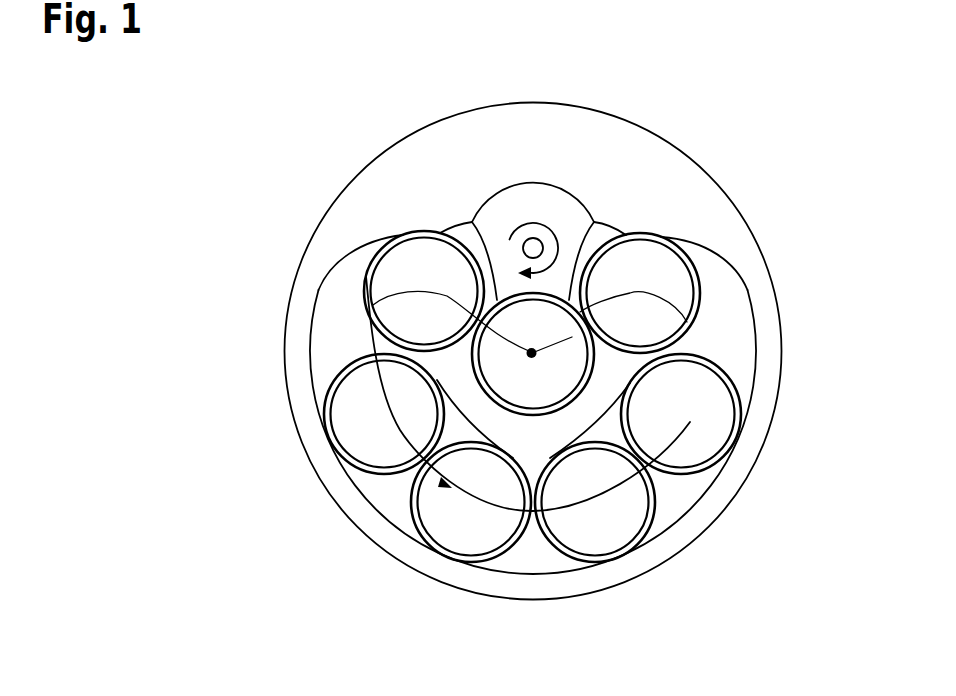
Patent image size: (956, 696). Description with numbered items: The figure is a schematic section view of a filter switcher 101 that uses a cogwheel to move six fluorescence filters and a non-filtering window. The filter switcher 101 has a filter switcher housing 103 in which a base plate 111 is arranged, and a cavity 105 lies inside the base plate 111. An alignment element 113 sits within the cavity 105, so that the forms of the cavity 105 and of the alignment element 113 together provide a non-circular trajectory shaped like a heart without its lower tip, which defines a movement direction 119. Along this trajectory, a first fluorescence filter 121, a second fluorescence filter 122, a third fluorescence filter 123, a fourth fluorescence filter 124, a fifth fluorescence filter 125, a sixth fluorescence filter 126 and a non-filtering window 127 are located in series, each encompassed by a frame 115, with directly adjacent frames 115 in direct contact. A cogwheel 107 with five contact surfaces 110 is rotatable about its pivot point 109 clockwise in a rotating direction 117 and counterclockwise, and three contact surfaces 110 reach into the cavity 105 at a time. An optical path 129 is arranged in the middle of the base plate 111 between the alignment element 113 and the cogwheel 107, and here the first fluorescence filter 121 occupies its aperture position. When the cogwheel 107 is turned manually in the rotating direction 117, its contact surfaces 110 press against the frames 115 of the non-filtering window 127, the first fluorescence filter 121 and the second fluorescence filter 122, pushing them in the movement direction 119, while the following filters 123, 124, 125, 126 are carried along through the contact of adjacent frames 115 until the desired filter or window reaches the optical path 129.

The filter switcher 101 is at (190, 133).
The filter switcher housing 103 is at (733, 497).
The cavity 105 is at (727, 333).
The cogwheel 107 is at (537, 238).
The pivot point 109 is at (553, 228).
The contact surfaces 110 is at (507, 212).
The base plate 111 is at (458, 166).
The alignment element 113 is at (587, 416).
The frame 115 is at (448, 398).
The rotating direction 117 is at (521, 184).
The movement direction 119 is at (490, 507).
The first fluorescence filter 121 is at (517, 332).
The second fluorescence filter 122 is at (400, 276).
The third fluorescence filter 123 is at (360, 422).
The fourth fluorescence filter 124 is at (460, 519).
The fifth fluorescence filter 125 is at (603, 520).
The sixth fluorescence filter 126 is at (730, 426).
The non-filtering window 127 is at (663, 274).
The optical path 129 is at (531, 353).